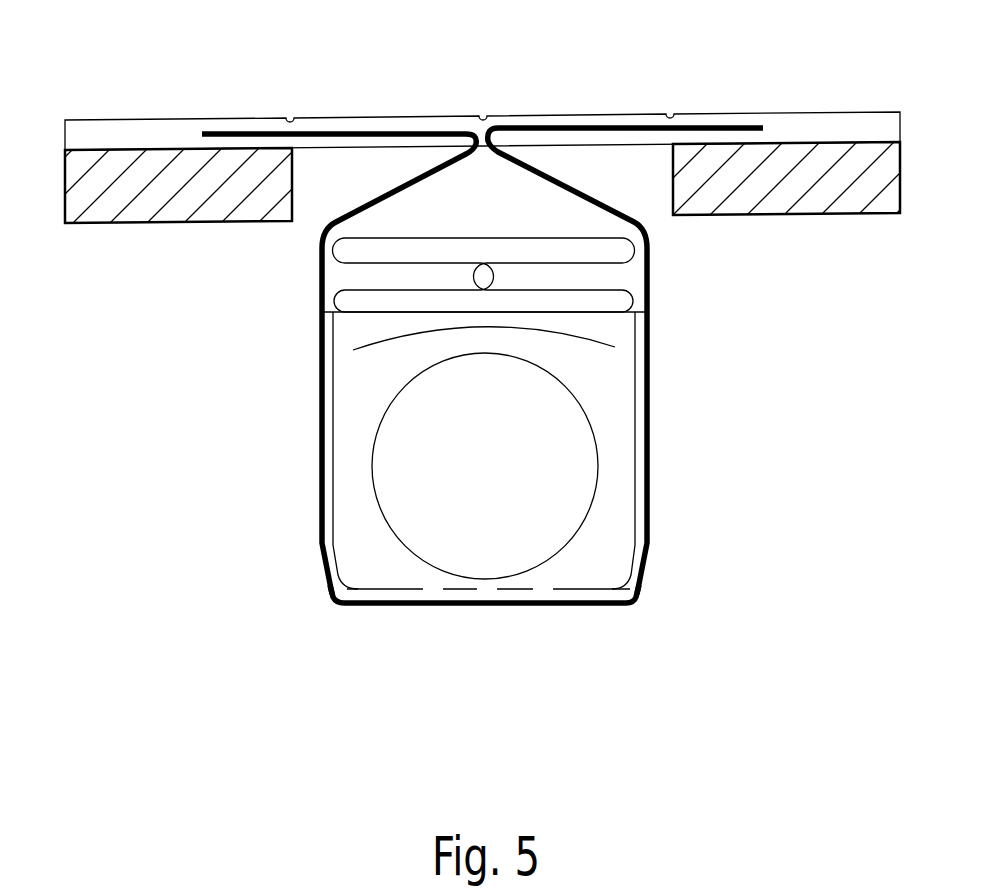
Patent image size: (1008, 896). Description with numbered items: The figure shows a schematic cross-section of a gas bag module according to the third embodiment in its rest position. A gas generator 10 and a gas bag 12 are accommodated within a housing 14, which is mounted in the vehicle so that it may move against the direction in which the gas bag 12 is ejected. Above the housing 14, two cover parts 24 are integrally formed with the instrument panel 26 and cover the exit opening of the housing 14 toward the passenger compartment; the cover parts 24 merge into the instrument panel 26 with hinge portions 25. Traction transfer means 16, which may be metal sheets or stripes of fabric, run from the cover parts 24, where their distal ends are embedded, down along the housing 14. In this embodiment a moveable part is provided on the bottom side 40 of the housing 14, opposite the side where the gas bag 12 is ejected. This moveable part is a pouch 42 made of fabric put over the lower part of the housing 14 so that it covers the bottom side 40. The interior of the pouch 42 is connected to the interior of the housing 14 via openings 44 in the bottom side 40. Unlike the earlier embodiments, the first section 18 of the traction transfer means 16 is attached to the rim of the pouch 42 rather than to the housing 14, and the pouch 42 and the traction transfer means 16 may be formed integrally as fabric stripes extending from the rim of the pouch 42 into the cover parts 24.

The gas generator 10 is at (553, 430).
The gas bag 12 is at (624, 260).
The housing 14 is at (617, 535).
The traction transfer means 16 is at (650, 390).
The first portion 18 is at (650, 488).
The cover parts 24 is at (545, 140).
The hinge portions 25 is at (287, 118).
The instrument panel 26 is at (132, 202).
The bottom side 40 is at (392, 590).
The pouch 42 is at (641, 598).
The openings 44 is at (433, 590).